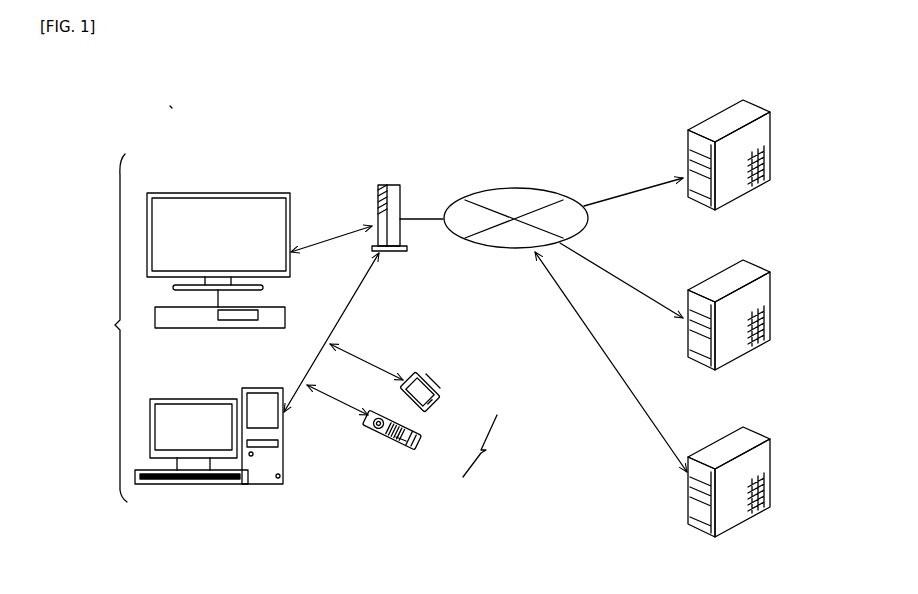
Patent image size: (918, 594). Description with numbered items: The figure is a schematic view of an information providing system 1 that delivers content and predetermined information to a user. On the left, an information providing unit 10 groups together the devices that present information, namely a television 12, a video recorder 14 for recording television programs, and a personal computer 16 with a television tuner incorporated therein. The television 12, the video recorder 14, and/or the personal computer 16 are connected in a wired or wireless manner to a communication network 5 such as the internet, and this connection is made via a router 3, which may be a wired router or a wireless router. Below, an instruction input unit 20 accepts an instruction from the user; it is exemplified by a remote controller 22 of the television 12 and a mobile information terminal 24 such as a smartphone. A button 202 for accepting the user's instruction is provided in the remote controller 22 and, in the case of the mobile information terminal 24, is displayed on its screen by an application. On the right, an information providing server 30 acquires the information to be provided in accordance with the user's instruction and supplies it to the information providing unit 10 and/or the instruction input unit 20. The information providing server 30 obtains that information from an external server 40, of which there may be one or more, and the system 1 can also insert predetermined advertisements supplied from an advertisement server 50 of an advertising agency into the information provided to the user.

The information providing system 1 is at (172, 108).
The router 3 is at (391, 185).
The communication network 5 is at (515, 188).
The information providing unit 10 is at (109, 328).
The television 12 is at (214, 192).
The video recorder 14 is at (286, 316).
The personal computer 16 is at (222, 398).
The instruction input unit 20 is at (485, 446).
The remote controller 22 is at (420, 442).
The mobile information terminal 24 is at (437, 401).
The information providing server 30 is at (750, 110).
The external server 40 is at (750, 270).
The advertisement server 50 is at (750, 437).
The button 202 is at (433, 372).